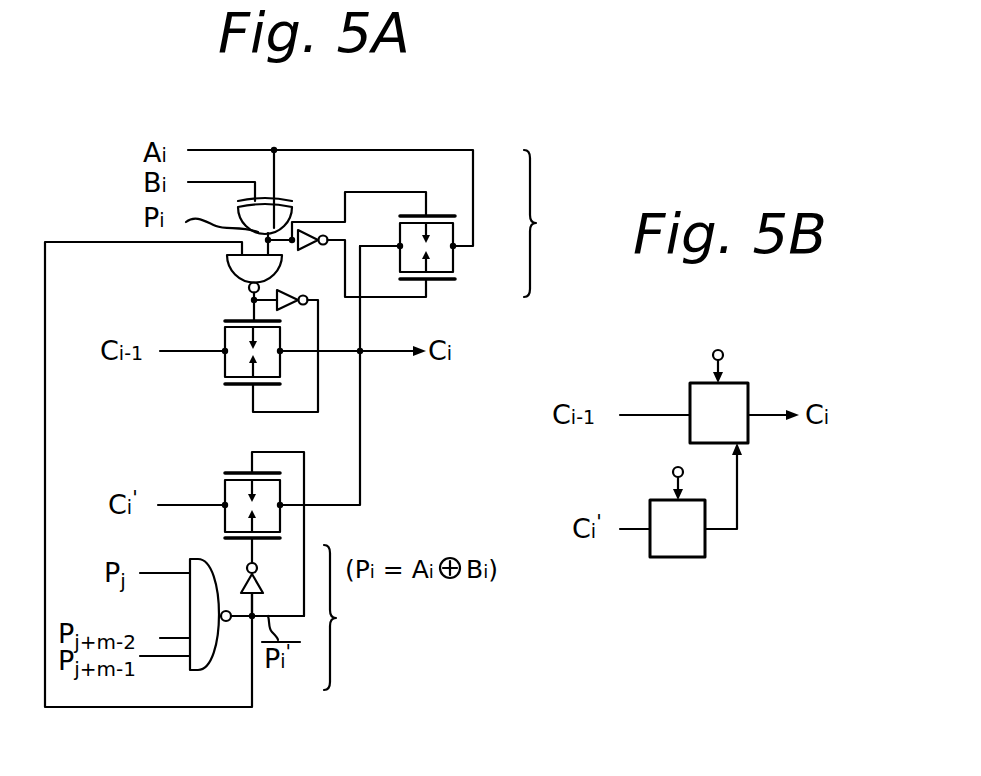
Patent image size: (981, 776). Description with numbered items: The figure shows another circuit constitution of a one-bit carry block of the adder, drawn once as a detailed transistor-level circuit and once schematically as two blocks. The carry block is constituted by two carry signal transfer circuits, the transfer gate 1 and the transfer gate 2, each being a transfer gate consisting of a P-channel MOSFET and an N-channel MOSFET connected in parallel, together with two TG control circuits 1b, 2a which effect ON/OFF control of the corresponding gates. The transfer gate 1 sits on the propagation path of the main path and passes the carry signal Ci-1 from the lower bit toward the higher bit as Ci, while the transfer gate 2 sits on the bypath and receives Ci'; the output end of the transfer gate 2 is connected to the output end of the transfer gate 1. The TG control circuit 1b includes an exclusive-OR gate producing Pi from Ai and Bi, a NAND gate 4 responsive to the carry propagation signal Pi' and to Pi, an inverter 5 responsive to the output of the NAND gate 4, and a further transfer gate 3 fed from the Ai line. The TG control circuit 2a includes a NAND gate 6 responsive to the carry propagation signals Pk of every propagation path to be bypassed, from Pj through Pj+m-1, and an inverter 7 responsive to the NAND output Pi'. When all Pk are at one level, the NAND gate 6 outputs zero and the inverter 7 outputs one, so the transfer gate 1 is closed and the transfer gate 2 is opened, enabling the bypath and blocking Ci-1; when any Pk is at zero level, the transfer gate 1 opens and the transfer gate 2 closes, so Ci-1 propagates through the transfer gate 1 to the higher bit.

In FIG. 5A, the transfer gate 1 is at (283, 337).
In FIG. 5B, the transfer gate 1 is at (750, 392).
In FIG. 5A, the transfer gate 2 is at (272, 488).
In FIG. 5B, the transfer gate 2 is at (708, 548).
In FIG. 5A, the third transmission gate 3 is at (455, 234).
In FIG. 5A, the NAND gate 4 is at (233, 270).
In FIG. 5A, the inverter 5 is at (293, 292).
In FIG. 5A, the NAND gate 6 is at (206, 662).
In FIG. 5A, the inverter 7 is at (258, 582).
In FIG. 5A, the TG control circuit 1b is at (549, 223).
In FIG. 5B, the TG control circuit 1b is at (722, 350).
In FIG. 5A, the TG control circuit 2a is at (349, 617).
In FIG. 5B, the TG control circuit 2a is at (674, 466).